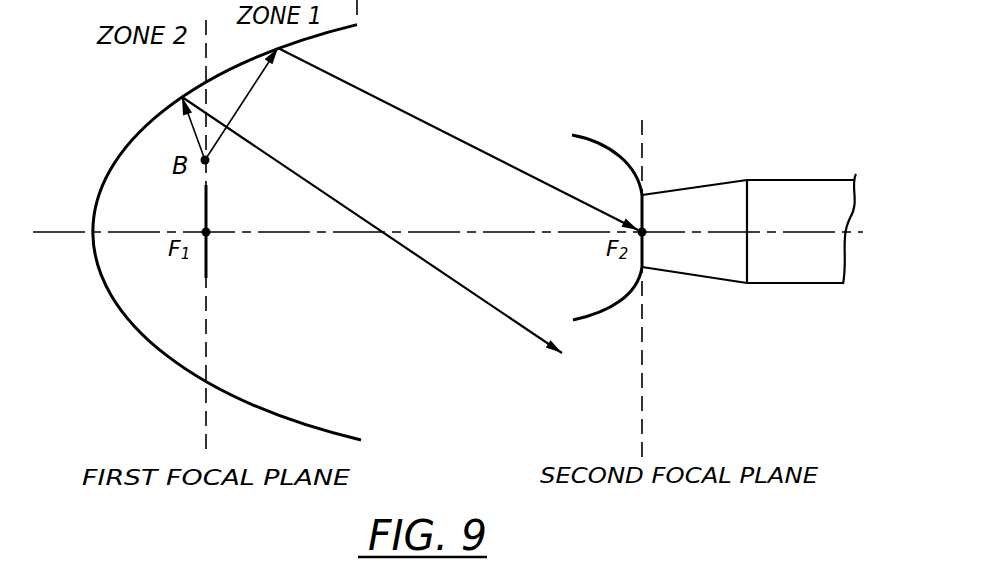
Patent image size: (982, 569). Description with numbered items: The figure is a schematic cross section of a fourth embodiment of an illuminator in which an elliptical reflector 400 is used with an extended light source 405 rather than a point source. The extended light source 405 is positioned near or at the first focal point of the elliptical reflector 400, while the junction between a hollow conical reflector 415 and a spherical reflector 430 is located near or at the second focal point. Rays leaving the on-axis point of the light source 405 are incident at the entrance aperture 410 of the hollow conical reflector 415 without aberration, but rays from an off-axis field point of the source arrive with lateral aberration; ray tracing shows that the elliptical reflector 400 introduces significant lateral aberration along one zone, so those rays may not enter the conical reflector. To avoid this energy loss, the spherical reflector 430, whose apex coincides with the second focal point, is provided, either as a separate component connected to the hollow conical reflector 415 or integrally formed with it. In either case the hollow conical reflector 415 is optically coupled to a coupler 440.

The elliptical reflector 400 is at (113, 170).
The extended light source 405 is at (208, 265).
The entrance aperture 410 is at (645, 268).
The hollow conical reflector 415 is at (718, 278).
The spherical reflector 430 is at (590, 140).
The coupler 440 is at (792, 180).